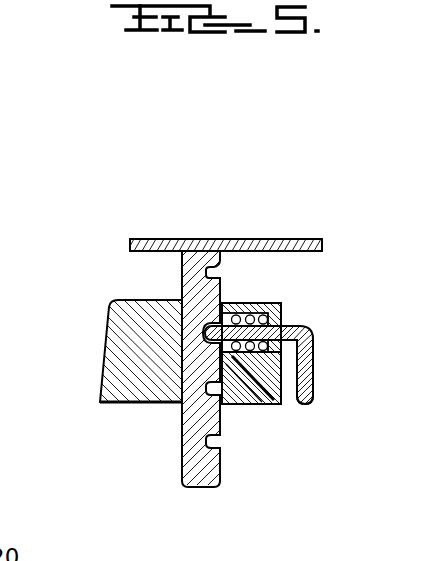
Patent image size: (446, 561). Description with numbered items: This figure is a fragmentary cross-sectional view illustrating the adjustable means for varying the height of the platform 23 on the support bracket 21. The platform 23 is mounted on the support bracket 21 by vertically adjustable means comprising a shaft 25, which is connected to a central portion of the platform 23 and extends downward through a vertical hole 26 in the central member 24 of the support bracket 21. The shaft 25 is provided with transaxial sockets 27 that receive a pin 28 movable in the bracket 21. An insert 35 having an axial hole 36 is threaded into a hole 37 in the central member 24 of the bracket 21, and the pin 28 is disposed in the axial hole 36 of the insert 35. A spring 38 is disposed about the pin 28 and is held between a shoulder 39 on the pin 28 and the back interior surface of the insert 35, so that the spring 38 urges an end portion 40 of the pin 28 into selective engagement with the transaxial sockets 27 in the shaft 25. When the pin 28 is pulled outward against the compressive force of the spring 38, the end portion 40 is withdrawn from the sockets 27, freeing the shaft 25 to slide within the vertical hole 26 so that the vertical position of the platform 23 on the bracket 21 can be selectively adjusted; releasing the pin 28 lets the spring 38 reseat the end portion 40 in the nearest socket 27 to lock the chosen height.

The support bracket 21 is at (88, 393).
The platform 23 is at (307, 238).
The central member 24 is at (120, 400).
The shaft 25 is at (192, 488).
The vertical hole 26 is at (183, 292).
The transaxial sockets 27 is at (224, 270).
The pin 28 is at (303, 328).
The insert 35 is at (280, 316).
The axial hole 36 is at (284, 322).
The hole 37 is at (275, 306).
The spring 38 is at (270, 384).
The shoulder 39 is at (276, 402).
The end portion 40 is at (198, 240).